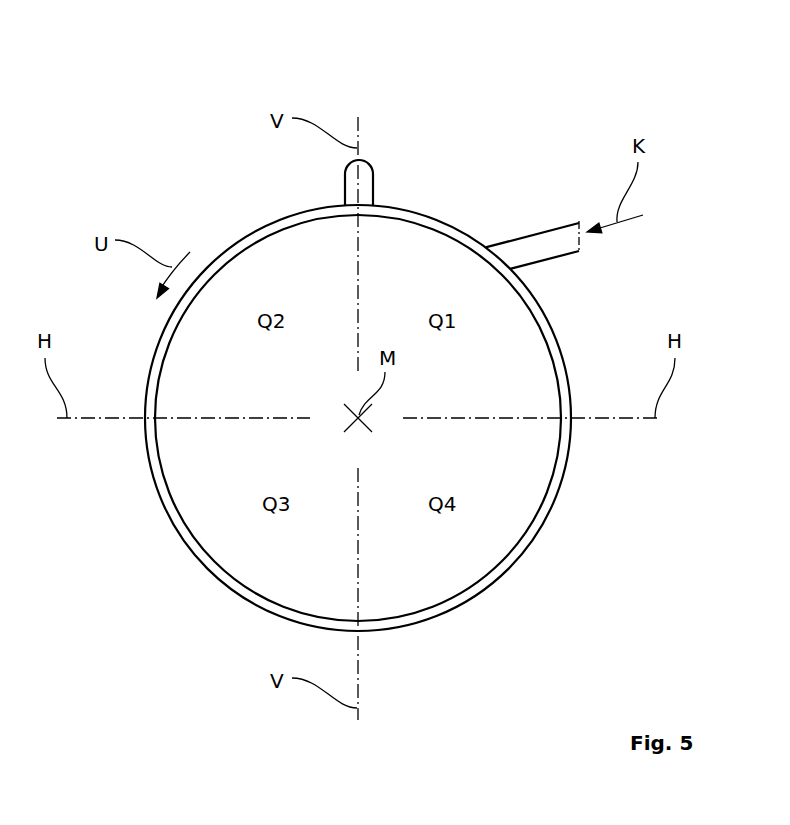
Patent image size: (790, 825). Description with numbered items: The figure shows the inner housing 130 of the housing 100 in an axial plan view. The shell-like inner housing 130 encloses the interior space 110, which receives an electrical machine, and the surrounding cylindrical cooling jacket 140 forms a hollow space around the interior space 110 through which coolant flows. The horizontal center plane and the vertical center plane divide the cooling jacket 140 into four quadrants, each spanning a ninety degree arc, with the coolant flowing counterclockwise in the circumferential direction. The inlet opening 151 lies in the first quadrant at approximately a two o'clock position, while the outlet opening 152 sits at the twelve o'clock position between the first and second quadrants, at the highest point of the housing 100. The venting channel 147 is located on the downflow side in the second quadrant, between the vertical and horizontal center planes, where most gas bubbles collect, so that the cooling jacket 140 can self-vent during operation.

The housing 100 is at (470, 92).
The interior space 110 is at (227, 543).
The inner housing 130 is at (523, 557).
The cooling jacket 140 is at (122, 470).
The venting channel 147 is at (208, 230).
The inlet opening 151 is at (532, 247).
The outlet opening 152 is at (352, 190).